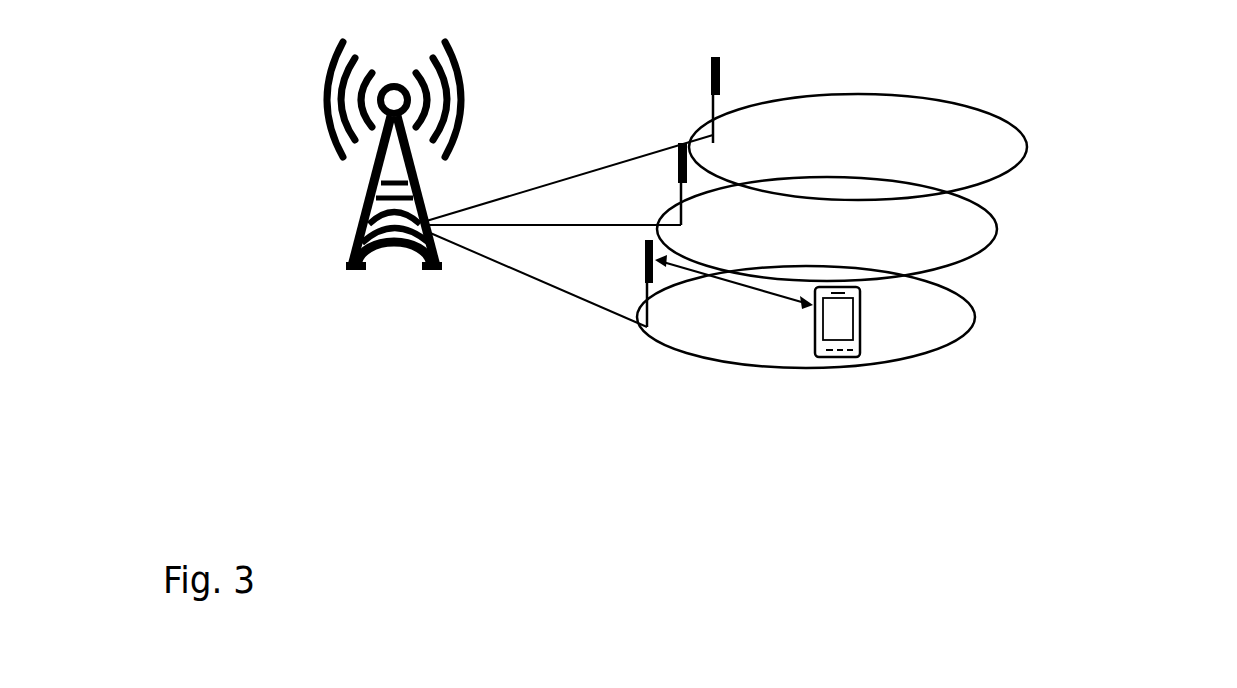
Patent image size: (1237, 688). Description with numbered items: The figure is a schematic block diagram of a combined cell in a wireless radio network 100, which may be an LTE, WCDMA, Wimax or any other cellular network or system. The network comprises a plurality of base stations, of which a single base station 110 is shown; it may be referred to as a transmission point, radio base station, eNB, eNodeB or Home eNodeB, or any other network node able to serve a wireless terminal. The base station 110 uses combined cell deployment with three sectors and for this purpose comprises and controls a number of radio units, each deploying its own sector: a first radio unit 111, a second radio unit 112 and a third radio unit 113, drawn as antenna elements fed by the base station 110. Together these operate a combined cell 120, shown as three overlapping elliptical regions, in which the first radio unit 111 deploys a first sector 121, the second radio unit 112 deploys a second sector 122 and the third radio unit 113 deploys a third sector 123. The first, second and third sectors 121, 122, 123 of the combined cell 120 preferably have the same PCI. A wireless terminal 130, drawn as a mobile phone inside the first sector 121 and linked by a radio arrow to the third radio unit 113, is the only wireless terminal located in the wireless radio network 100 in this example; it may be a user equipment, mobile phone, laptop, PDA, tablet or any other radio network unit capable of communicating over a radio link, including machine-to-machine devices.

The wireless radio network 100 is at (890, 423).
The base station 110 is at (360, 245).
The first radio unit 111 is at (712, 87).
The second radio unit 112 is at (680, 170).
The third radio unit 113 is at (647, 268).
The combined cell 120 is at (922, 228).
The first sector 121 is at (960, 300).
The second sector 122 is at (983, 207).
The third sector 123 is at (1013, 123).
The wireless terminal 130 is at (861, 305).